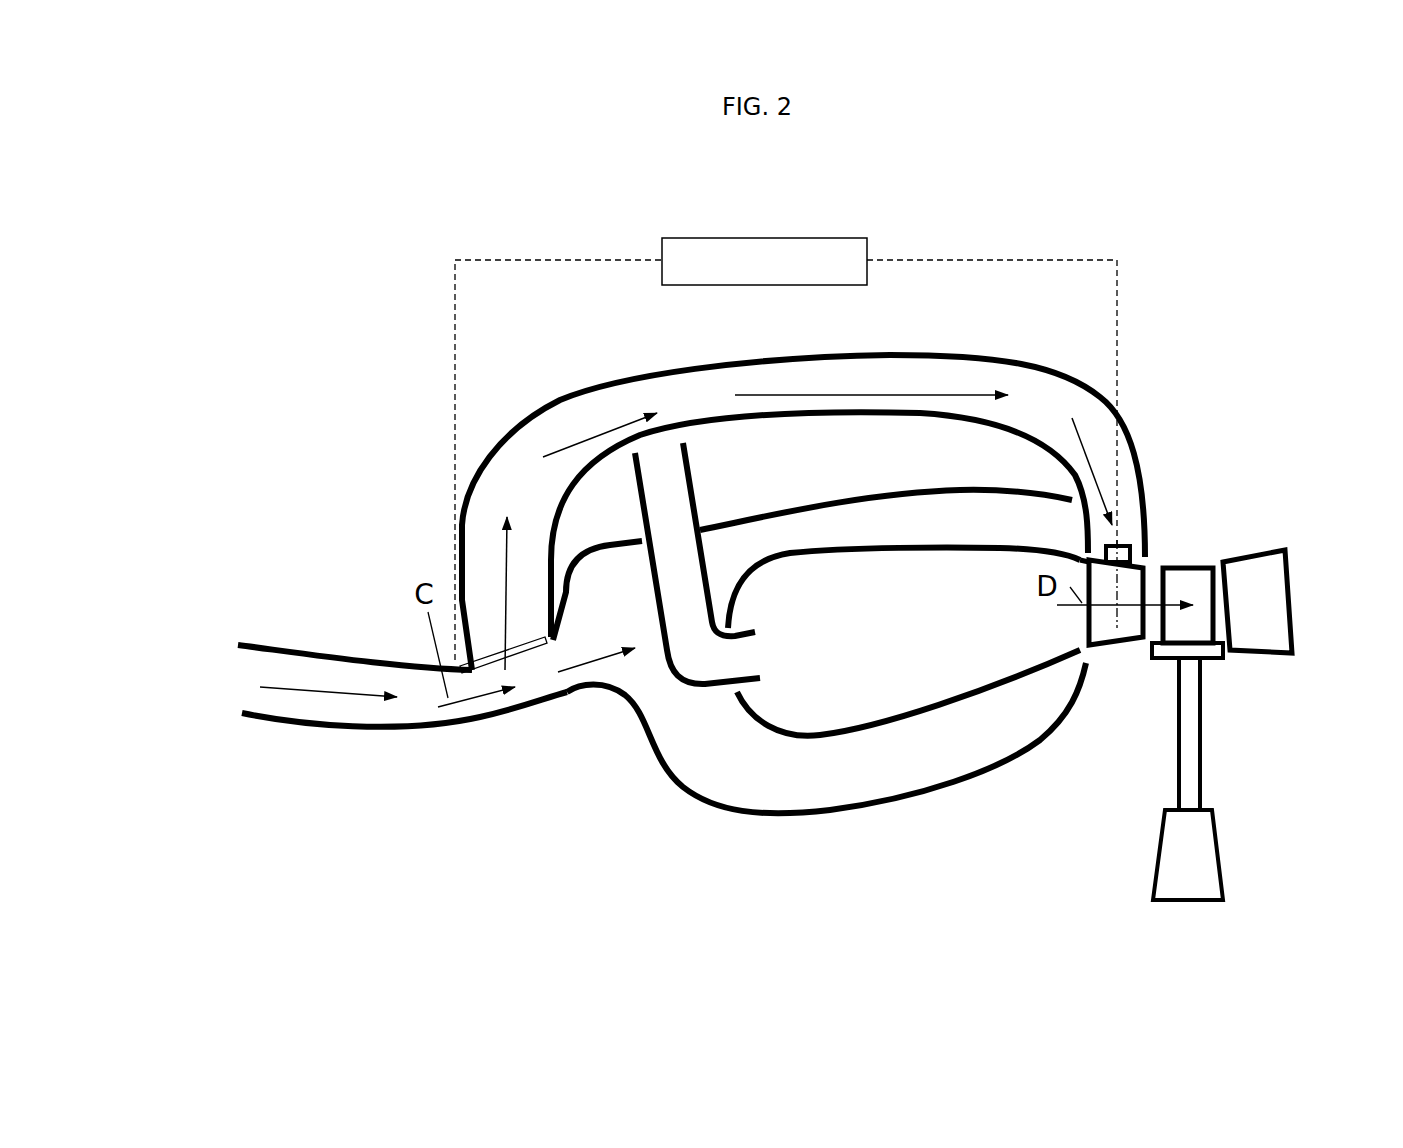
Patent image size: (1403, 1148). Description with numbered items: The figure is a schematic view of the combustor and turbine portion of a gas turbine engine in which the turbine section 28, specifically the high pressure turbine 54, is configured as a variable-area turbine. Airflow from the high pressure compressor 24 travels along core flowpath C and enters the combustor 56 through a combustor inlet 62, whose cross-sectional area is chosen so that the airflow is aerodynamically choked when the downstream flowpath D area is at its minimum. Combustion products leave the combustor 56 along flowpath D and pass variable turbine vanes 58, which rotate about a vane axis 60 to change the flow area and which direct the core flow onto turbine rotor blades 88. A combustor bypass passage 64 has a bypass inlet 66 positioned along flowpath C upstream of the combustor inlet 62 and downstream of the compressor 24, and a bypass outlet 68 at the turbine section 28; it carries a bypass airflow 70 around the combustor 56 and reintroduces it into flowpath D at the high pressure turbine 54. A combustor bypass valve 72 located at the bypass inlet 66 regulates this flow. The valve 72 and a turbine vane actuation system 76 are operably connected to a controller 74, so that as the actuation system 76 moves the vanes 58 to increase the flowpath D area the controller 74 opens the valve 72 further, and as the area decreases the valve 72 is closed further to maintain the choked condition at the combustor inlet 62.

The high pressure compressor 24 is at (206, 695).
The turbine section 28 is at (1318, 405).
The high pressure turbine 54 is at (1202, 482).
The combustor 56 is at (860, 646).
The variable turbine vanes 58 is at (1130, 622).
The vane axis 60 is at (1118, 534).
The combustor inlet 62 is at (583, 677).
The combustor bypass passage 64 is at (1018, 421).
The bypass inlet 66 is at (537, 637).
The bypass outlet 68 is at (1087, 553).
The bypass airflow 70 is at (601, 430).
The combustor bypass valve 72 is at (495, 652).
The controller 74 is at (818, 237).
The turbine vane actuation system 76 is at (1131, 562).
The turbine rotor blades 88 is at (1262, 602).